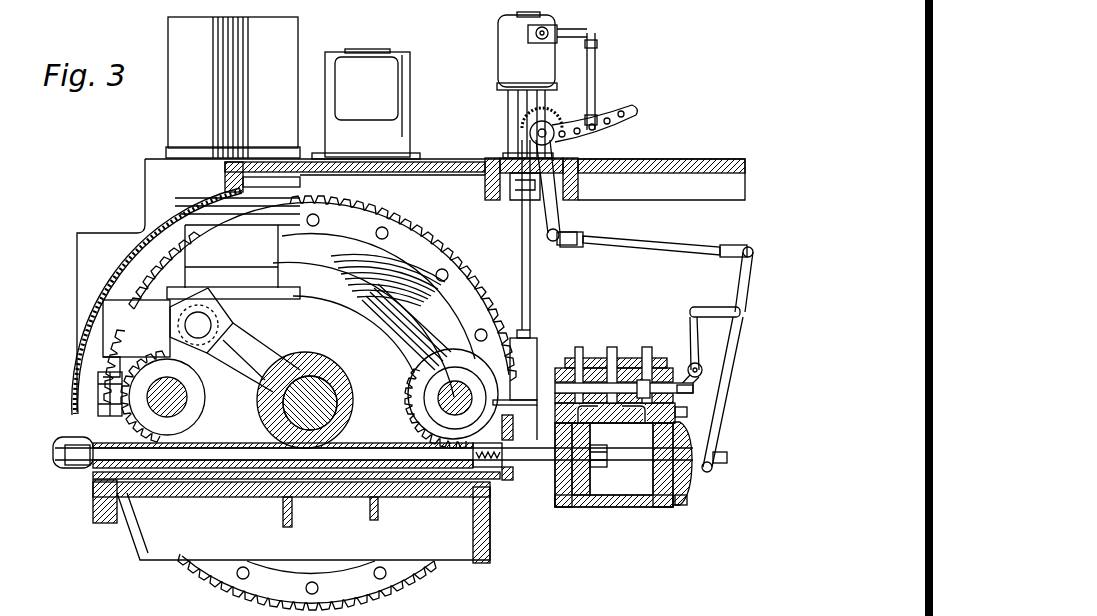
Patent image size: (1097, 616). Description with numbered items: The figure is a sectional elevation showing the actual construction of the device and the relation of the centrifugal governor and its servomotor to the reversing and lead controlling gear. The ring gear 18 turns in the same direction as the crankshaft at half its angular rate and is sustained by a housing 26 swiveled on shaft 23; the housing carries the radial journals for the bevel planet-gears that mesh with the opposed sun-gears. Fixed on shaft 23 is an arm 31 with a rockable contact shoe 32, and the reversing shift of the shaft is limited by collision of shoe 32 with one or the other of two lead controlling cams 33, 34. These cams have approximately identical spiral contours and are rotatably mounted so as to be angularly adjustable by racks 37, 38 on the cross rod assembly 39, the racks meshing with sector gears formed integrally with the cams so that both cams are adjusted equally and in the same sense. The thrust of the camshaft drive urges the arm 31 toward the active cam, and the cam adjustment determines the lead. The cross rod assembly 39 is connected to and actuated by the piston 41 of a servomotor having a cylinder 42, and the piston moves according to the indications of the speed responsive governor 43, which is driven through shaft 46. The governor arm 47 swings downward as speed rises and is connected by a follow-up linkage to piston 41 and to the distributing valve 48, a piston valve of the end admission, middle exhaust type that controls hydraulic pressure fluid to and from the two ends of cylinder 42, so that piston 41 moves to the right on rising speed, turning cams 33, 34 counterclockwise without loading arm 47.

The ring gear 18 is at (410, 228).
The shaft 23 is at (322, 360).
The housing 26 is at (310, 297).
The arm 31 is at (262, 345).
The rockable contact shoe 32 is at (170, 322).
The lead controlling cam 33 is at (170, 357).
The lead controlling cam 34 is at (505, 380).
The rack 37 is at (160, 490).
The rack 38 is at (397, 443).
The cross rod assembly 39 is at (528, 470).
The piston 41 is at (593, 481).
The cylinder 42 is at (605, 499).
The speed responsive governor 43 is at (505, 58).
The shaft 46 is at (531, 281).
The arm 47 is at (571, 33).
The distributing valve 48 is at (650, 368).